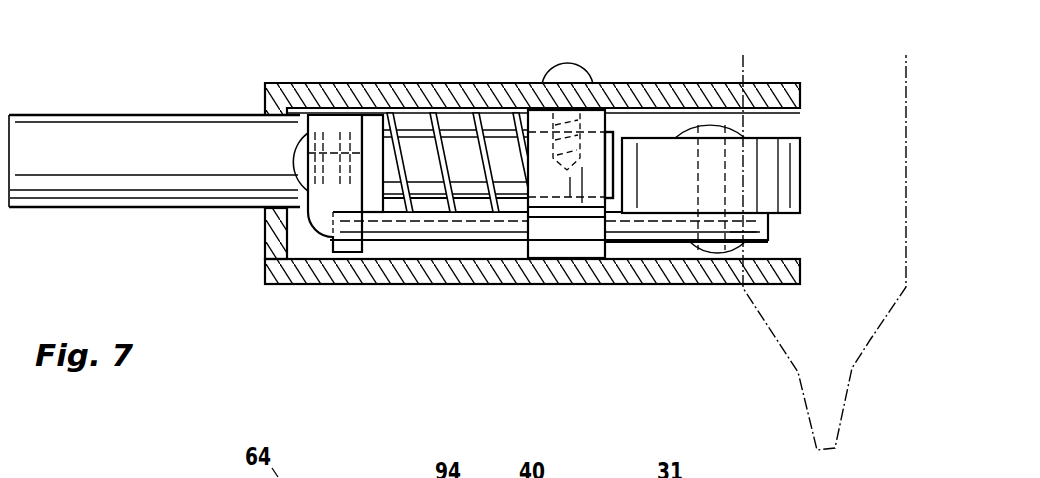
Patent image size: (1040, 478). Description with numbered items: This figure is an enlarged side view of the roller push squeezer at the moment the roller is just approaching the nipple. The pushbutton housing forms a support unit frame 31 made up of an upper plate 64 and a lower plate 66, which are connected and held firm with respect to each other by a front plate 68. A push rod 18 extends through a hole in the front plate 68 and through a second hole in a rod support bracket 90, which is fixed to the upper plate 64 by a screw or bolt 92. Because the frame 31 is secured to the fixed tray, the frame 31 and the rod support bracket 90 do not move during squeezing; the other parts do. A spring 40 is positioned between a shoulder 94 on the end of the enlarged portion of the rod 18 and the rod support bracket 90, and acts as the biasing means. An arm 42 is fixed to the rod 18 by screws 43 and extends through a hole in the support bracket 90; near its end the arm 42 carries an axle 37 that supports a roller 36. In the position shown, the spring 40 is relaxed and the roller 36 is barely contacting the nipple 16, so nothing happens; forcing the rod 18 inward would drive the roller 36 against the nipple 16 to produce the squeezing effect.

The nipple 16 is at (908, 165).
The push rod 18 is at (72, 209).
The support unit frame 31 is at (481, 186).
The roller 36 is at (788, 160).
The axle 37 is at (723, 253).
The spring 40 is at (452, 205).
The arm 42 is at (640, 235).
The screws 43 is at (302, 160).
The upper plate 64 is at (327, 85).
The lower plate 66 is at (343, 284).
The front plate 68 is at (264, 239).
The rod support bracket 90 is at (597, 118).
The screw or bolt 92 is at (572, 75).
The shoulder 94 is at (383, 167).